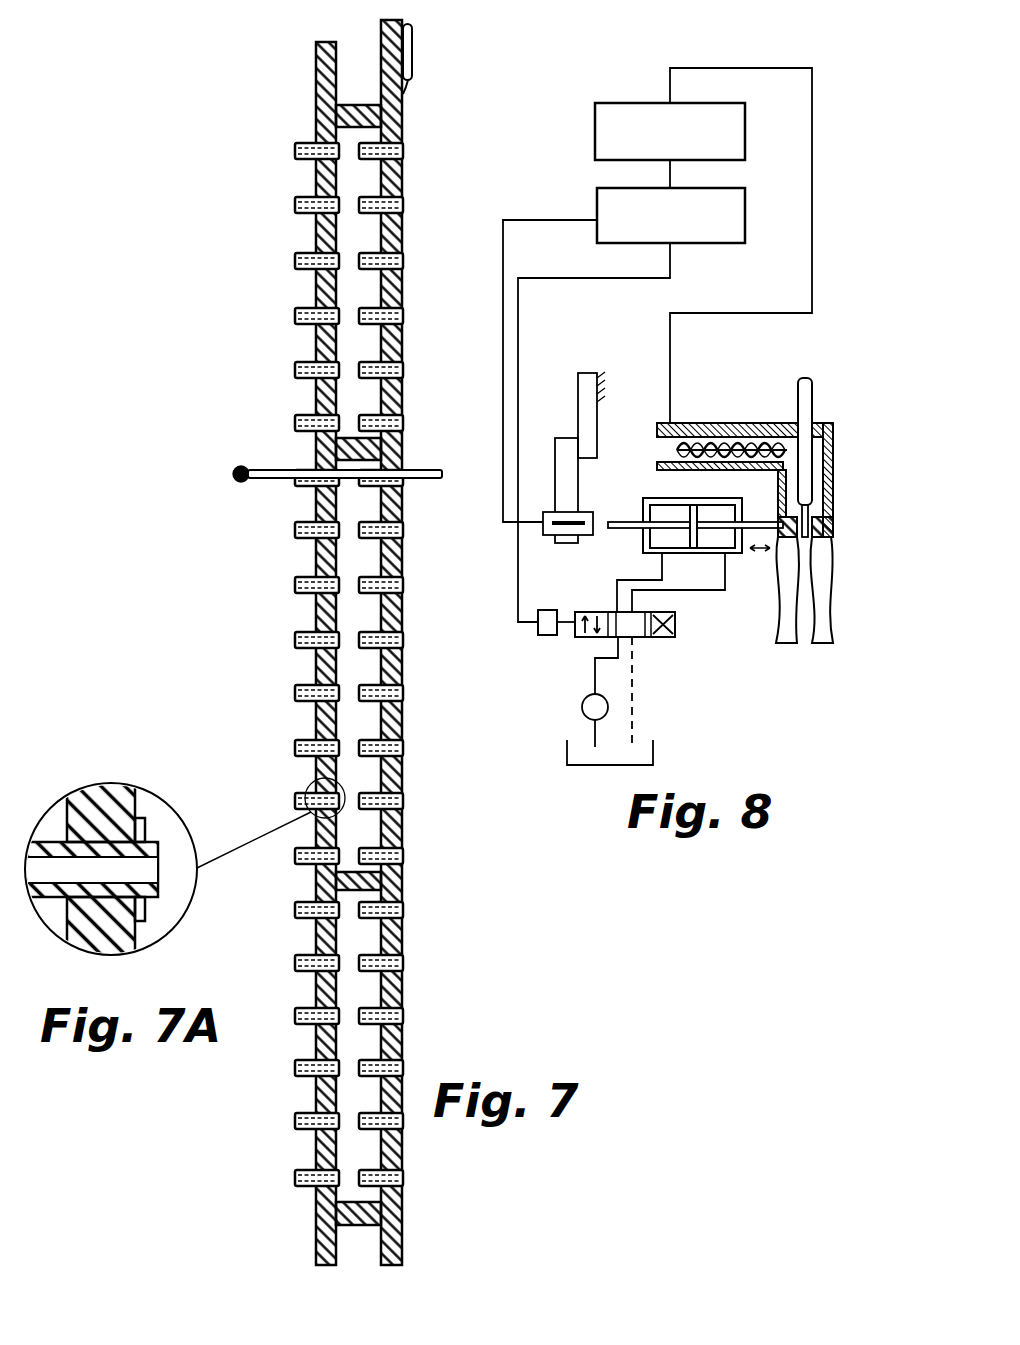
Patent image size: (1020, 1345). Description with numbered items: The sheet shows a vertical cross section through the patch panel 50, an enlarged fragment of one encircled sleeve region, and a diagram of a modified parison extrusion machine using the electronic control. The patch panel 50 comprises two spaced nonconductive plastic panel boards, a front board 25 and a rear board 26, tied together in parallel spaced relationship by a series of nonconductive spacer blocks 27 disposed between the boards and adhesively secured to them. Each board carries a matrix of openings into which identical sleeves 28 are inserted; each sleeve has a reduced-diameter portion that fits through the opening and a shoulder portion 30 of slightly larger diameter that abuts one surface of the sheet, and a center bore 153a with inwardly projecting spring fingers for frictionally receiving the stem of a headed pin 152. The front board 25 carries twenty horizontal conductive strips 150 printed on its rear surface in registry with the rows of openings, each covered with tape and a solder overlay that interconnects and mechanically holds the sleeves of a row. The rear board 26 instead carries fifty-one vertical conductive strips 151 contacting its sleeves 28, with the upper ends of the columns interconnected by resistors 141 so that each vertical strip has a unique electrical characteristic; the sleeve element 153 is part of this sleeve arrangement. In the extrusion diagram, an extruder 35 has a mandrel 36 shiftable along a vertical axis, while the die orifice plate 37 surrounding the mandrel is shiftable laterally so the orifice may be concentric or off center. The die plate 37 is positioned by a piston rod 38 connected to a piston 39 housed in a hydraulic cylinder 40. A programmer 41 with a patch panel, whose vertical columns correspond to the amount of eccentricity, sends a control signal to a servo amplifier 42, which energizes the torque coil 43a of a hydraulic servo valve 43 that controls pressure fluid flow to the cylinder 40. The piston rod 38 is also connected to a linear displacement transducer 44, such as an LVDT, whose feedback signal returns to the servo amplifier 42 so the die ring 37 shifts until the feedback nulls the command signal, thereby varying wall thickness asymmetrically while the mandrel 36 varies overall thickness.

In FIG. 7, the front panel board 25 is at (318, 46).
In FIG. 7A, the front panel board 25 is at (100, 948).
In FIG. 7, the rear panel board 26 is at (381, 62).
In FIG. 7, the spacer block 27 is at (355, 105).
In FIG. 7, the sleeve 28 is at (404, 151).
In FIG. 7A, the sleeve 28 is at (160, 845).
In FIG. 7A, the shoulder portion 30 is at (68, 840).
In FIG. 7, the resistor 141 is at (413, 56).
In FIG. 7, the horizontal conductive strip 150 is at (337, 152).
In FIG. 7, the vertical conductive strip 151 is at (403, 285).
In FIG. 7, the headed pin 152 is at (270, 483).
In FIG. 7, the peg 153 is at (296, 694).
In FIG. 7, the center bore 153a is at (340, 322).
In FIG. 7A, the center bore 153a is at (73, 872).
In FIG. 7, the patch panel 50 is at (428, 1023).
In FIG. 8, the programmer 41 is at (746, 130).
In FIG. 8, the servo amplifier 42 is at (746, 218).
In FIG. 8, the extruder 35 is at (754, 406).
In FIG. 8, the mandrel 36 is at (806, 425).
In FIG. 8, the die orifice plate 37 is at (834, 530).
In FIG. 8, the piston rod 38 is at (753, 520).
In FIG. 8, the piston 39 is at (694, 505).
In FIG. 8, the hydraulic cylinder 40 is at (737, 555).
In FIG. 8, the hydraulic servo valve 43 is at (664, 640).
In FIG. 8, the torque coil 43a is at (548, 638).
In FIG. 8, the linear displacement transducer 44 is at (584, 542).